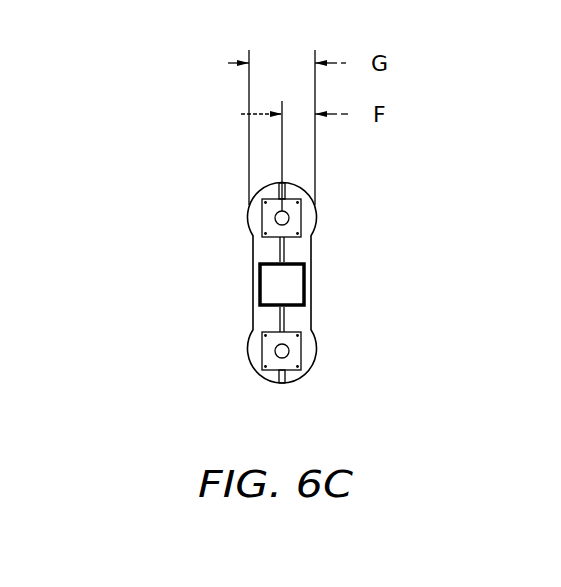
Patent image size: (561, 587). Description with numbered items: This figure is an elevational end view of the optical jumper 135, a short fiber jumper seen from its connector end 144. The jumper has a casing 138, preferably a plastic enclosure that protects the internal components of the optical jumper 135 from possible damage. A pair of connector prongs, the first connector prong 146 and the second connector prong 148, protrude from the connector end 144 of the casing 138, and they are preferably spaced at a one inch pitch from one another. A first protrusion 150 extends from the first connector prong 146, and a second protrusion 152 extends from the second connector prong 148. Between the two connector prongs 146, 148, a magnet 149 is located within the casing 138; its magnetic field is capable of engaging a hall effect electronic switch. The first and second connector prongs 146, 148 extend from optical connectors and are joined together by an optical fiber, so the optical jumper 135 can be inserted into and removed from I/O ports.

The optical jumper 135 is at (440, 73).
The casing 138 is at (312, 368).
The connector end 144 is at (310, 318).
The first connector prong 146 is at (301, 216).
The second connector prong 148 is at (306, 371).
The magnet 149 is at (305, 268).
The first protrusion 150 is at (275, 218).
The second protrusion 152 is at (279, 357).